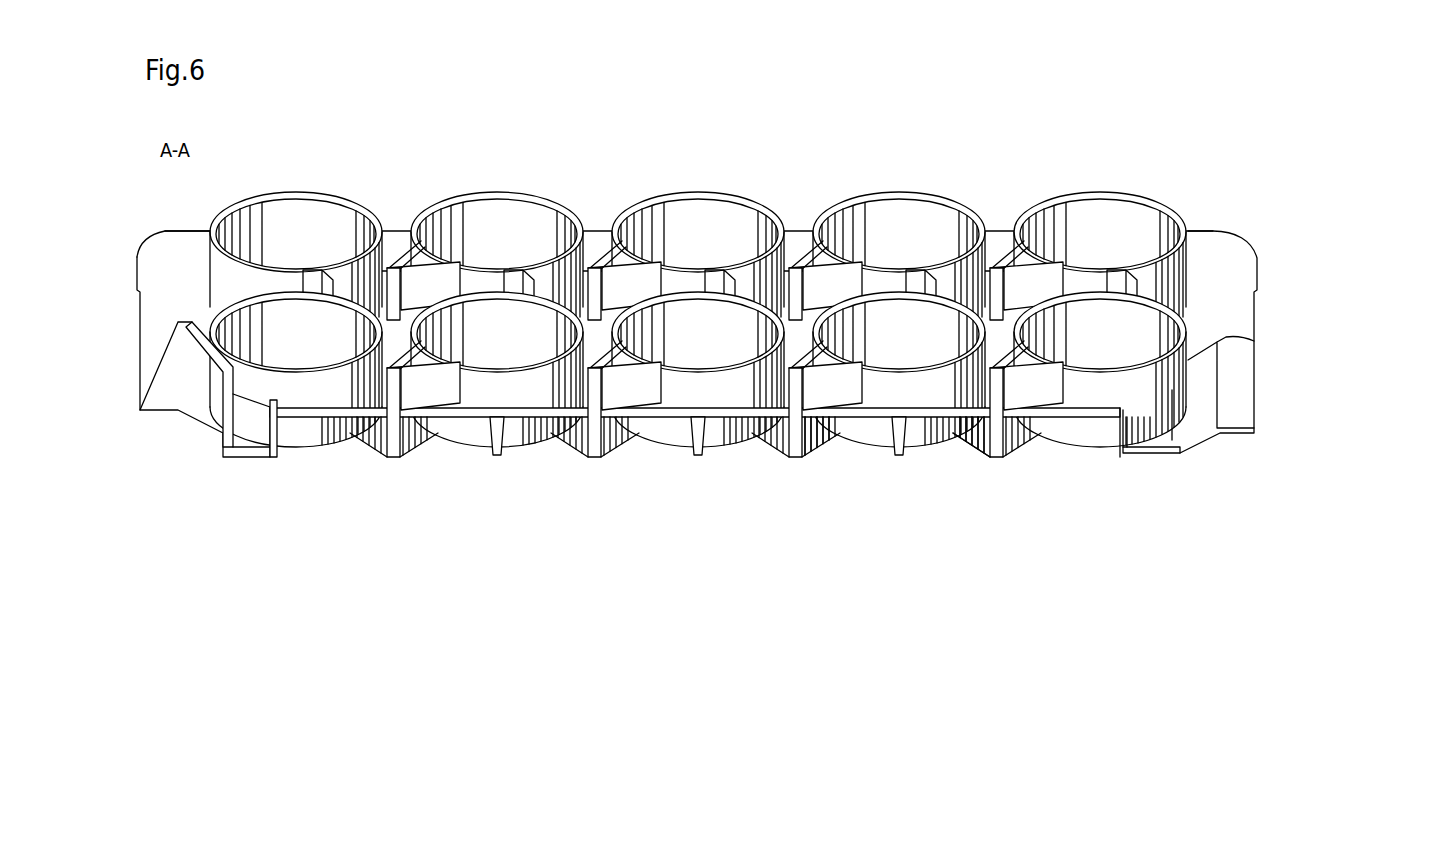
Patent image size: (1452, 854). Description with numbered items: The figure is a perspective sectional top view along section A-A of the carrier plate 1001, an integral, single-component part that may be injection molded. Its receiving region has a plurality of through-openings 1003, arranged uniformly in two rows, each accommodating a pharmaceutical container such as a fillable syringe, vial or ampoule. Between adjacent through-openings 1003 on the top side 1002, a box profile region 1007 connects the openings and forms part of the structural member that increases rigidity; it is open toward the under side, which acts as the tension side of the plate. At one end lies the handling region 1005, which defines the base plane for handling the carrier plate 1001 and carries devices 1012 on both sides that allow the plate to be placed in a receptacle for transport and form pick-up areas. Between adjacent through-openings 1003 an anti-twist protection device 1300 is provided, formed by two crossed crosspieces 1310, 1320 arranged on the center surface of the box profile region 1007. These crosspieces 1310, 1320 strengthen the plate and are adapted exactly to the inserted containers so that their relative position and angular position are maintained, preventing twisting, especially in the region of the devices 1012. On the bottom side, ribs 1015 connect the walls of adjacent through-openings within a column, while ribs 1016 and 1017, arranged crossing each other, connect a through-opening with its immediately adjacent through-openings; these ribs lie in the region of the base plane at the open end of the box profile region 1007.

The carrier plate 1001 is at (776, 318).
The top side 1002 is at (971, 422).
The through-opening 1003 is at (936, 222).
The handling region 1005 is at (1228, 250).
The box profile region 1007 is at (1070, 418).
The device 1012 is at (1222, 338).
The rib 1015 is at (896, 433).
The rib 1016 is at (829, 433).
The rib 1017 is at (773, 433).
The anti-twist protection device 1300 is at (850, 229).
The crosspiece 1310 is at (858, 266).
The crosspiece 1320 is at (773, 287).